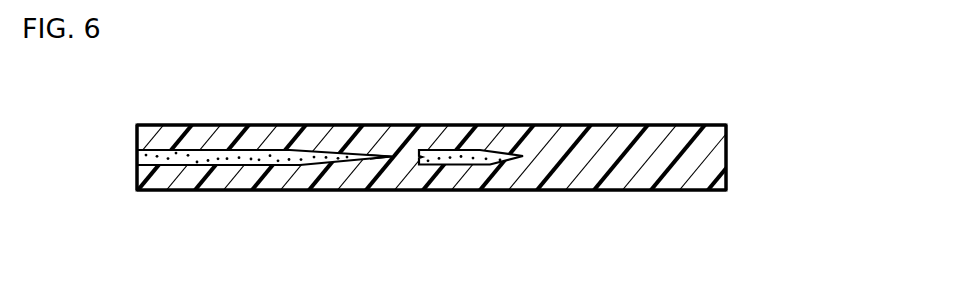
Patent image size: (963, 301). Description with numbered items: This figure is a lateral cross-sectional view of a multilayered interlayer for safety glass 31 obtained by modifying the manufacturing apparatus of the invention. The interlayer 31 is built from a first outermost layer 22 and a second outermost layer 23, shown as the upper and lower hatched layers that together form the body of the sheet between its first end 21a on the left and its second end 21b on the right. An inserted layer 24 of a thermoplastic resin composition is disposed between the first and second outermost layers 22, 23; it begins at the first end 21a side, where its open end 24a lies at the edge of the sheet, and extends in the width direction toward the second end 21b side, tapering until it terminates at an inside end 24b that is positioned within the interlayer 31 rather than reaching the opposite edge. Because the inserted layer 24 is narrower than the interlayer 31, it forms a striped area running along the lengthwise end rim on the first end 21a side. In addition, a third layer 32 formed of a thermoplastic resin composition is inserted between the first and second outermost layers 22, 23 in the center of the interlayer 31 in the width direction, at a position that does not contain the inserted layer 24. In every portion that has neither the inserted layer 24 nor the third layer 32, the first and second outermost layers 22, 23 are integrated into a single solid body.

The multilayered interlayer for safety glass 31 is at (638, 123).
The first outermost layer 22 is at (280, 135).
The second outermost layer 23 is at (265, 192).
The first end 21a is at (137, 128).
The second end 21b is at (728, 145).
The inserted layer 24 is at (212, 155).
The opening of groove 24a is at (135, 160).
The inside end 24b is at (394, 158).
The third layer 32 is at (484, 164).